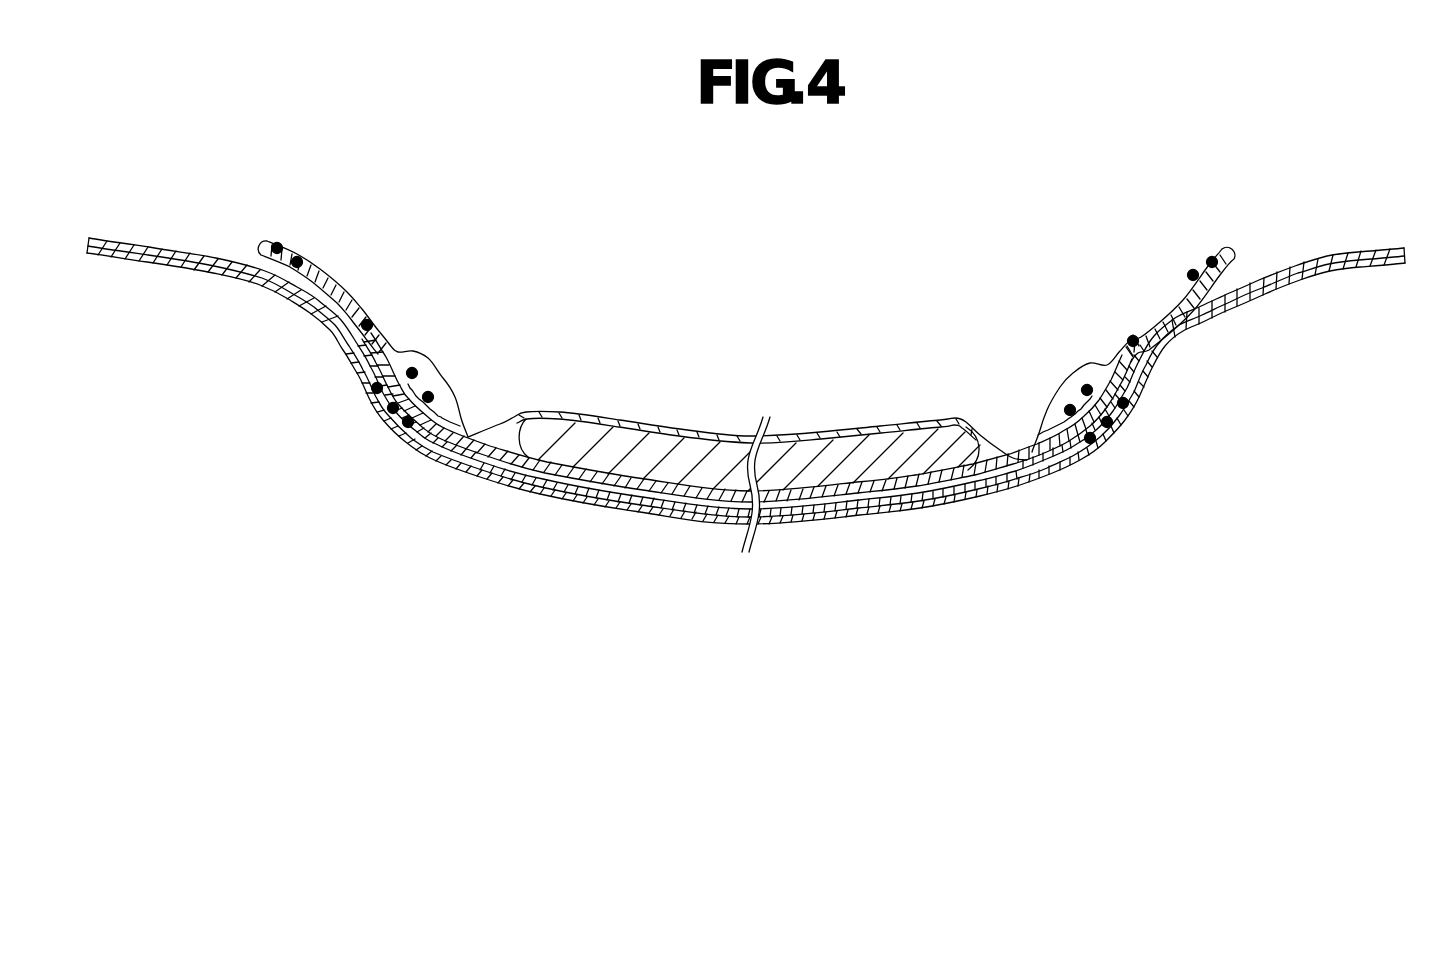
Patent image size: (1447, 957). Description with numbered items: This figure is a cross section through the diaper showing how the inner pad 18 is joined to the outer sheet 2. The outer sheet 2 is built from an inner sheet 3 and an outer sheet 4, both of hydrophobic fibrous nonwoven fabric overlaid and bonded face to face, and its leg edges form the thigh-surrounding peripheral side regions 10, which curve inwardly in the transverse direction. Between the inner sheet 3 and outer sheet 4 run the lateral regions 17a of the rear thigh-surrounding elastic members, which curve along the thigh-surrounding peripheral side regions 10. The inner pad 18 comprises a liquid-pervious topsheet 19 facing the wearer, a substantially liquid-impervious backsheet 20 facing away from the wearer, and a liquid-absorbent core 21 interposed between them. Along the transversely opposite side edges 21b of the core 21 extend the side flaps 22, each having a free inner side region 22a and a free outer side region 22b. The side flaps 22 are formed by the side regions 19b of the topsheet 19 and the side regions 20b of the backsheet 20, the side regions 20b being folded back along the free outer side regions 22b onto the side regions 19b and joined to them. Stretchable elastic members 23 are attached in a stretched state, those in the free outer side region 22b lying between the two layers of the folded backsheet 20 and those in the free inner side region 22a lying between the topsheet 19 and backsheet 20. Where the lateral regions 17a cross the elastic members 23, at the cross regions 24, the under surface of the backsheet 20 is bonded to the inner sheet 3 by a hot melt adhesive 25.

The outer sheet 2 is at (1406, 262).
The inner sheet 3 is at (848, 518).
The outer sheet 4 is at (807, 523).
The thigh-surrounding peripheral side regions 10 is at (1313, 268).
The lateral regions 17a is at (1092, 440).
The inner pad 18 is at (906, 425).
The topsheet 19 is at (712, 432).
The side regions of the topsheet 19b is at (1043, 417).
The backsheet 20 is at (667, 490).
The side regions of the backsheet 20b is at (1157, 330).
The liquid-absorbent core 21 is at (796, 452).
The side edges of the core 21b is at (990, 448).
The side flaps 22 is at (1162, 315).
The free inner side region 22a is at (1055, 410).
The free outer side region 22b is at (1222, 272).
The elastic members 23 is at (1210, 252).
The cross regions 24 is at (1133, 400).
The hot melt adhesive 25 is at (1160, 386).